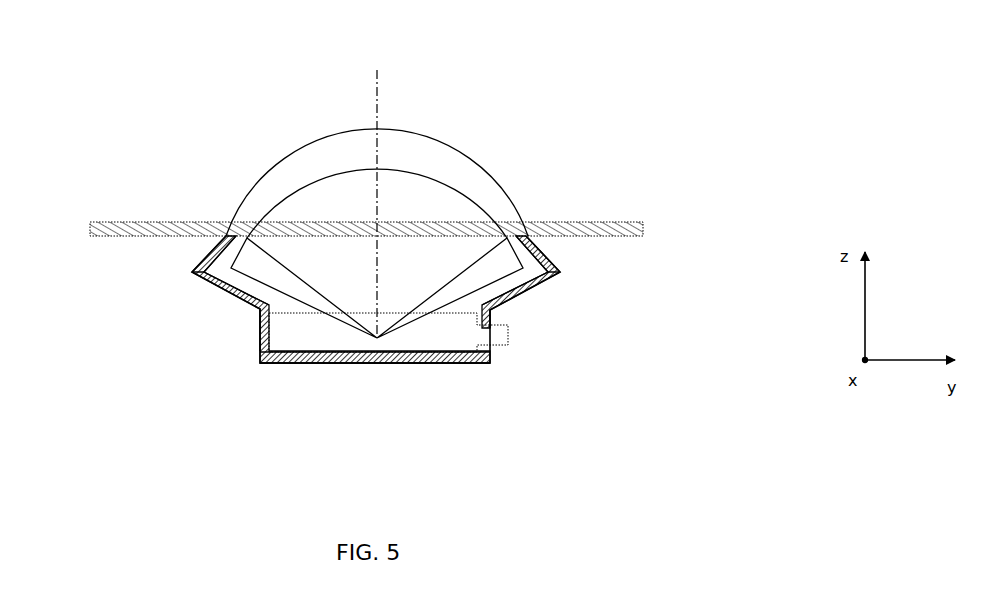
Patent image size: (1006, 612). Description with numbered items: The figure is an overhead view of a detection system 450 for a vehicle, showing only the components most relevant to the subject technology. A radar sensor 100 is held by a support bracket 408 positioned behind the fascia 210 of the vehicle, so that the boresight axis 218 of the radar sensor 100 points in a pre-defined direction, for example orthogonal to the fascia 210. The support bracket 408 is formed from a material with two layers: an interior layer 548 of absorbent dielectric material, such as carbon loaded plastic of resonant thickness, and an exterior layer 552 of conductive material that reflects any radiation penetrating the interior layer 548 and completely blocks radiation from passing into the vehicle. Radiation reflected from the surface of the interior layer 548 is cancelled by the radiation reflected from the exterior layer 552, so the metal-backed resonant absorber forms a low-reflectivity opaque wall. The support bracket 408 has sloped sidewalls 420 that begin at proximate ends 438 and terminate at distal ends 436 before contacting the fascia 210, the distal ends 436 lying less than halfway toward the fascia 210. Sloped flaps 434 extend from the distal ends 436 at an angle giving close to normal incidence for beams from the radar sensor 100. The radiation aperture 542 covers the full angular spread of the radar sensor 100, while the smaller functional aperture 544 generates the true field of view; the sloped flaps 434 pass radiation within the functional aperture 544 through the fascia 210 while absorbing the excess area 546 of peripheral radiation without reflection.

The radar sensor 100 is at (430, 338).
The fascia 210 is at (175, 221).
The boresight axis 218 is at (380, 107).
The support bracket 408 is at (357, 364).
The sloped sidewalls 420 is at (215, 285).
The sloped flaps 434 is at (218, 245).
The distal ends 436 is at (190, 272).
The proximate ends 438 is at (254, 310).
The detection system 450 is at (580, 90).
The radiation aperture 542 is at (350, 160).
The functional aperture 544 is at (252, 190).
The excess area 546 is at (489, 266).
The interior layer 548 is at (260, 345).
The exterior layer 552 is at (288, 364).